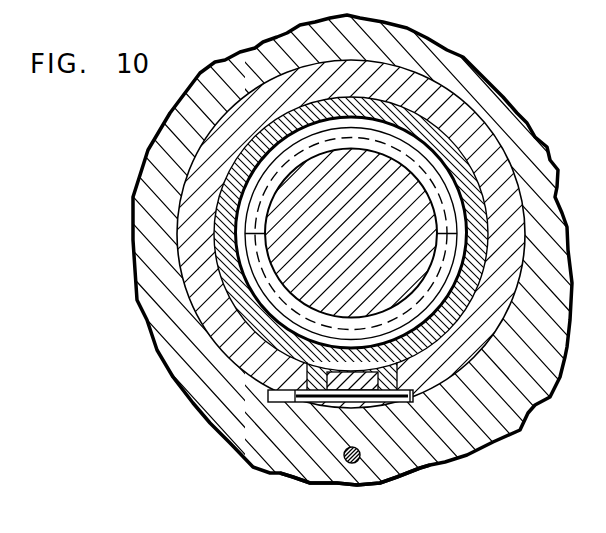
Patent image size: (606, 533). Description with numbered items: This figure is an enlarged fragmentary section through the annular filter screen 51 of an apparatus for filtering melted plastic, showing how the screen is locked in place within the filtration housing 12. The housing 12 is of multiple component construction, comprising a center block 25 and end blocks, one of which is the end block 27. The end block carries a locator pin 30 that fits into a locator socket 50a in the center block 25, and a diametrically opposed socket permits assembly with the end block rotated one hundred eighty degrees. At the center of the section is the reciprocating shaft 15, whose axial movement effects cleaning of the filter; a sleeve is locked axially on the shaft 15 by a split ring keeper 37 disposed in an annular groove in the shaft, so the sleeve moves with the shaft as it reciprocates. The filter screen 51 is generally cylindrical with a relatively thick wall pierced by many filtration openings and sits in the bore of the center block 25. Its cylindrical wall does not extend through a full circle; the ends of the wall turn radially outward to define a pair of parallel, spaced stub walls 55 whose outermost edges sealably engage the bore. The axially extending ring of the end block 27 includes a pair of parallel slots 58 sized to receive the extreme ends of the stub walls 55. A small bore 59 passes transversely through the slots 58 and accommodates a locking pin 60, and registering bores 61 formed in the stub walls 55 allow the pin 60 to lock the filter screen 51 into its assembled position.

The filtration housing 12 is at (438, 448).
The reciprocating shaft 15 is at (366, 231).
The center block 25 is at (478, 432).
The end block 27 is at (249, 307).
The locator pin 30 is at (351, 464).
The split ring keeper 37 is at (371, 151).
The locator socket 50a is at (342, 460).
The filter screen 51 is at (251, 344).
The stub walls 55 is at (311, 404).
The slots 58 is at (310, 404).
The small bore 59 is at (283, 398).
The locking pin 60 is at (350, 404).
The registering bores 61 is at (374, 404).